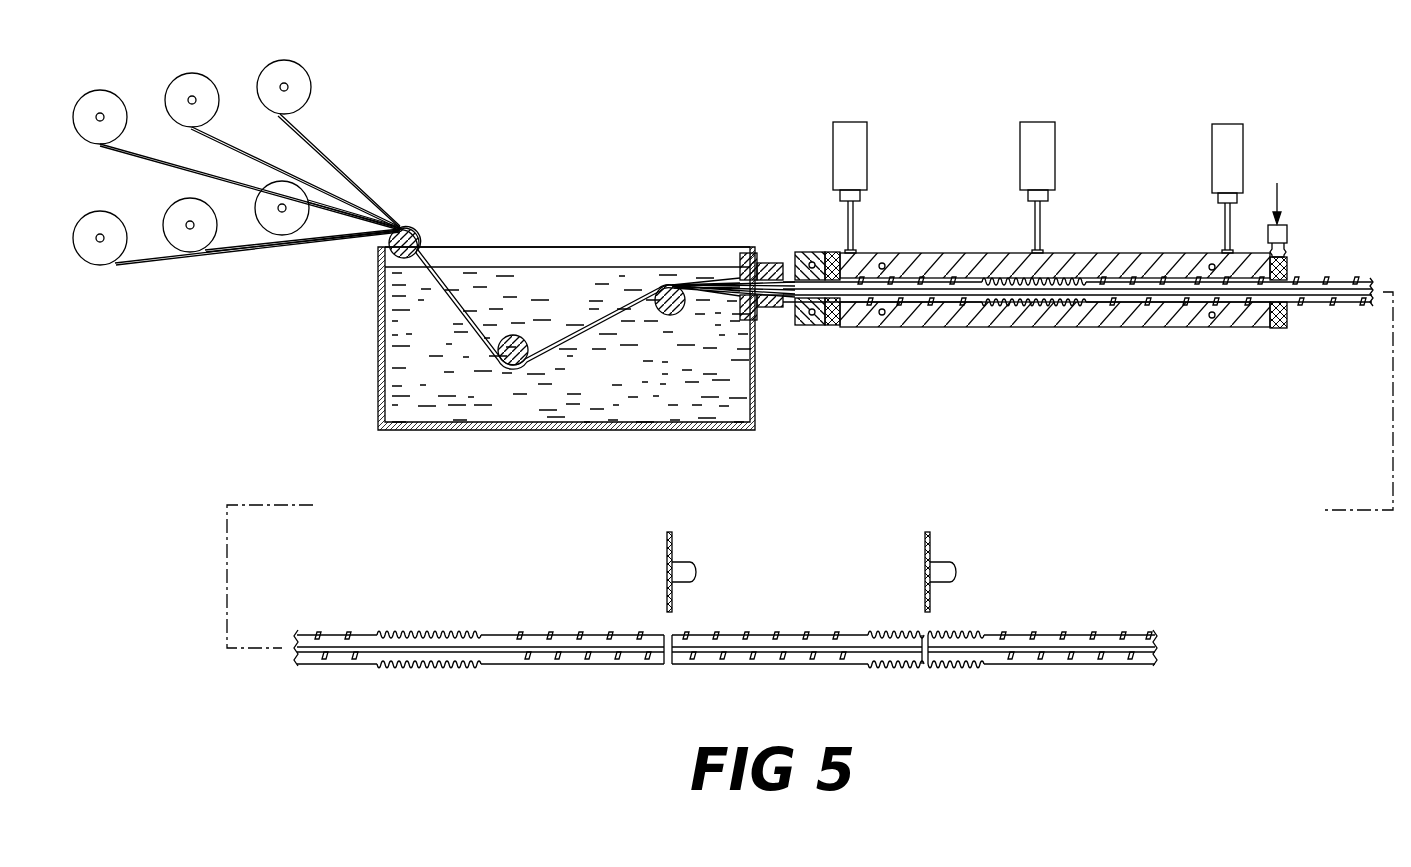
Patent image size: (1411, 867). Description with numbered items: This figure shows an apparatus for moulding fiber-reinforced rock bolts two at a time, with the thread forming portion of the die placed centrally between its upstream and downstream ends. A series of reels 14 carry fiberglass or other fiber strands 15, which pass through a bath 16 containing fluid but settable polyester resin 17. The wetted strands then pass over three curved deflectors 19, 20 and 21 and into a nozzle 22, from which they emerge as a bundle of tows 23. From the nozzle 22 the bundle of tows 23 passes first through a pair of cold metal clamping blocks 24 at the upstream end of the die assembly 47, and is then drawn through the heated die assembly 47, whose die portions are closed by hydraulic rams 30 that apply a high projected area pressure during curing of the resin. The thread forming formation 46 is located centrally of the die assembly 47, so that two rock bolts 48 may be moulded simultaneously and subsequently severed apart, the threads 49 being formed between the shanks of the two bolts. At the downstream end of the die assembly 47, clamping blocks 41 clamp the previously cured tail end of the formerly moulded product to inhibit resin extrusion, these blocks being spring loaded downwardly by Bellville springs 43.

The reels 14 is at (187, 85).
The fiber strands 15 is at (327, 153).
The bath 16 is at (380, 368).
The polyester resin 17 is at (400, 317).
The curved deflector 19 is at (373, 240).
The curved deflector 20 is at (522, 337).
The curved deflector 21 is at (652, 287).
The nozzle 22 is at (763, 265).
The bundle of tows 23 is at (793, 288).
The metal clamping blocks 24 is at (813, 323).
The hydraulic rams 30 is at (1028, 163).
The downstream clamping blocks 41 is at (1287, 263).
The Bellville springs 43 is at (1271, 249).
The thread forming formation 46 is at (1022, 303).
The die assembly 47 is at (1107, 230).
The rock bolts 48 is at (533, 633).
The threads 49 is at (433, 633).